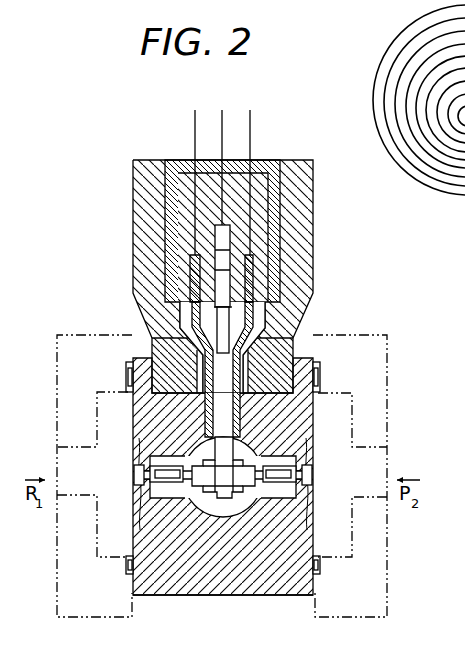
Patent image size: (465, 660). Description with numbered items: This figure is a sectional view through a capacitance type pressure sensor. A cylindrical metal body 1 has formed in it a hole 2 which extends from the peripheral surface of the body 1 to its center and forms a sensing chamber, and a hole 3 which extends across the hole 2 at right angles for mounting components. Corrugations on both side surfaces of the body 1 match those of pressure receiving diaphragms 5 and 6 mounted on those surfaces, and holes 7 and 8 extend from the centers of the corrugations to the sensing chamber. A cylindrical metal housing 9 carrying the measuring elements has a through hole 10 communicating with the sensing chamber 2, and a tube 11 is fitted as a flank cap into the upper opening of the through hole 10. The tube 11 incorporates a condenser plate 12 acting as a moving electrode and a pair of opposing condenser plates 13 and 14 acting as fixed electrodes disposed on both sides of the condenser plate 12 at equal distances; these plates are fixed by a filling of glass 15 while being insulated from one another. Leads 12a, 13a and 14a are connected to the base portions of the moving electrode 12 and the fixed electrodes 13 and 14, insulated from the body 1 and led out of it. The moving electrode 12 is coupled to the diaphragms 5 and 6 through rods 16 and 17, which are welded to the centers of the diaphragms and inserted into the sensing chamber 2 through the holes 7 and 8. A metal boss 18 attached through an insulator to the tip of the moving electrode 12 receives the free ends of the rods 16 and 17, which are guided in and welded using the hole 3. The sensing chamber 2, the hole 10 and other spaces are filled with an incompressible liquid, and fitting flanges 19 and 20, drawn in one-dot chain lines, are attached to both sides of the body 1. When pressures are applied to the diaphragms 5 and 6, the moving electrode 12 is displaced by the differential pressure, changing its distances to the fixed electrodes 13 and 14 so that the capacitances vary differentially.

The cylindrical body 1 is at (217, 585).
The hole 2 is at (258, 412).
The hole 3 is at (207, 513).
The pressure receiving diaphragm 5 is at (97, 440).
The pressure receiving diaphragm 6 is at (318, 447).
The hole 7 is at (178, 488).
The hole 8 is at (267, 490).
The cylindrical metal housing 9 is at (300, 181).
The through hole 10 is at (263, 318).
The tube 11 is at (271, 162).
The condenser plate 12 is at (220, 378).
The lead 12a is at (223, 127).
The condenser plate 13 is at (213, 352).
The lead 13a is at (195, 137).
The condenser plate 14 is at (238, 362).
The lead 14a is at (251, 126).
The glass 15 is at (257, 247).
The rod 16 is at (160, 473).
The rod 17 is at (298, 471).
The metal boss 18 is at (240, 510).
The fitting flange 19 is at (57, 527).
The fitting flange 20 is at (387, 593).